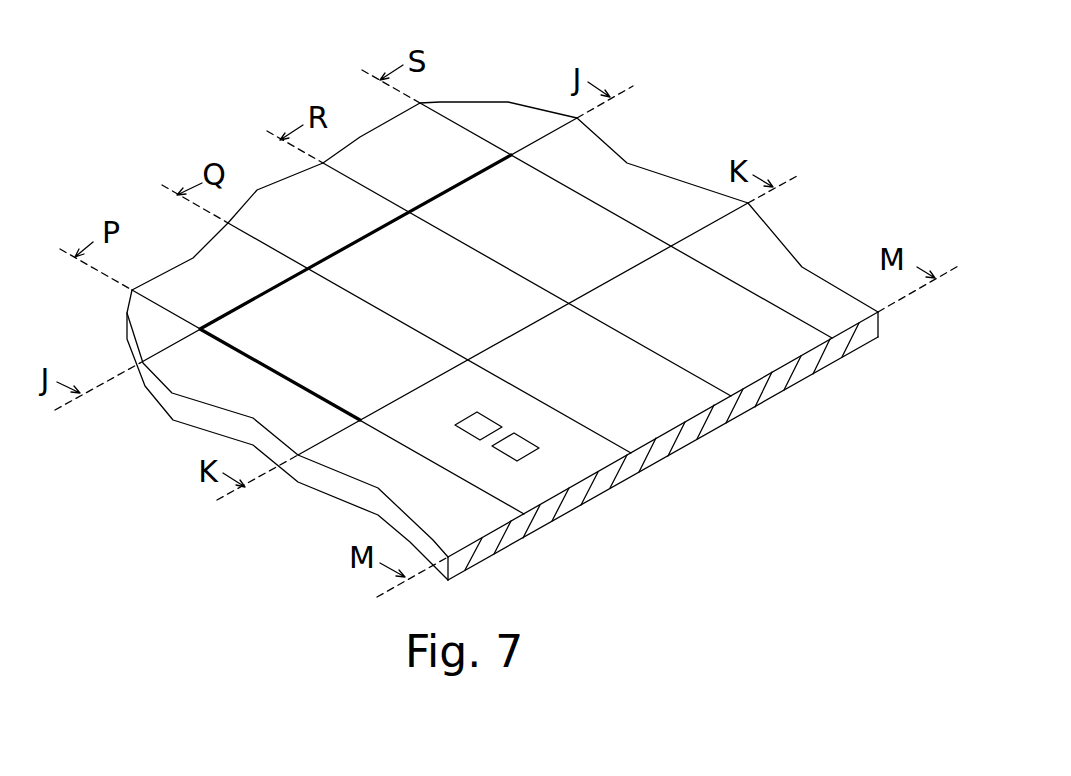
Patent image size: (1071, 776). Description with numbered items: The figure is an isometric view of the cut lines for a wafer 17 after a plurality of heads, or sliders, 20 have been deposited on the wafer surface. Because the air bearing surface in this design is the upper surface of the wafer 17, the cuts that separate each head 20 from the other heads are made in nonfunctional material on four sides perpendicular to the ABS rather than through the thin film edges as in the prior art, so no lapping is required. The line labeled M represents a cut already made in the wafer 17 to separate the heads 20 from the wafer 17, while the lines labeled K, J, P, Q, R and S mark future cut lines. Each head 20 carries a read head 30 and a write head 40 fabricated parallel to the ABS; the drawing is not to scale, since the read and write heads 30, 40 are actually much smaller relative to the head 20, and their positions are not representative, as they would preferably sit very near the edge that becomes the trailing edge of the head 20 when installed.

The wafer 17 is at (688, 99).
The head 20 is at (482, 332).
The read head 30 is at (523, 452).
The write head 40 is at (470, 420).